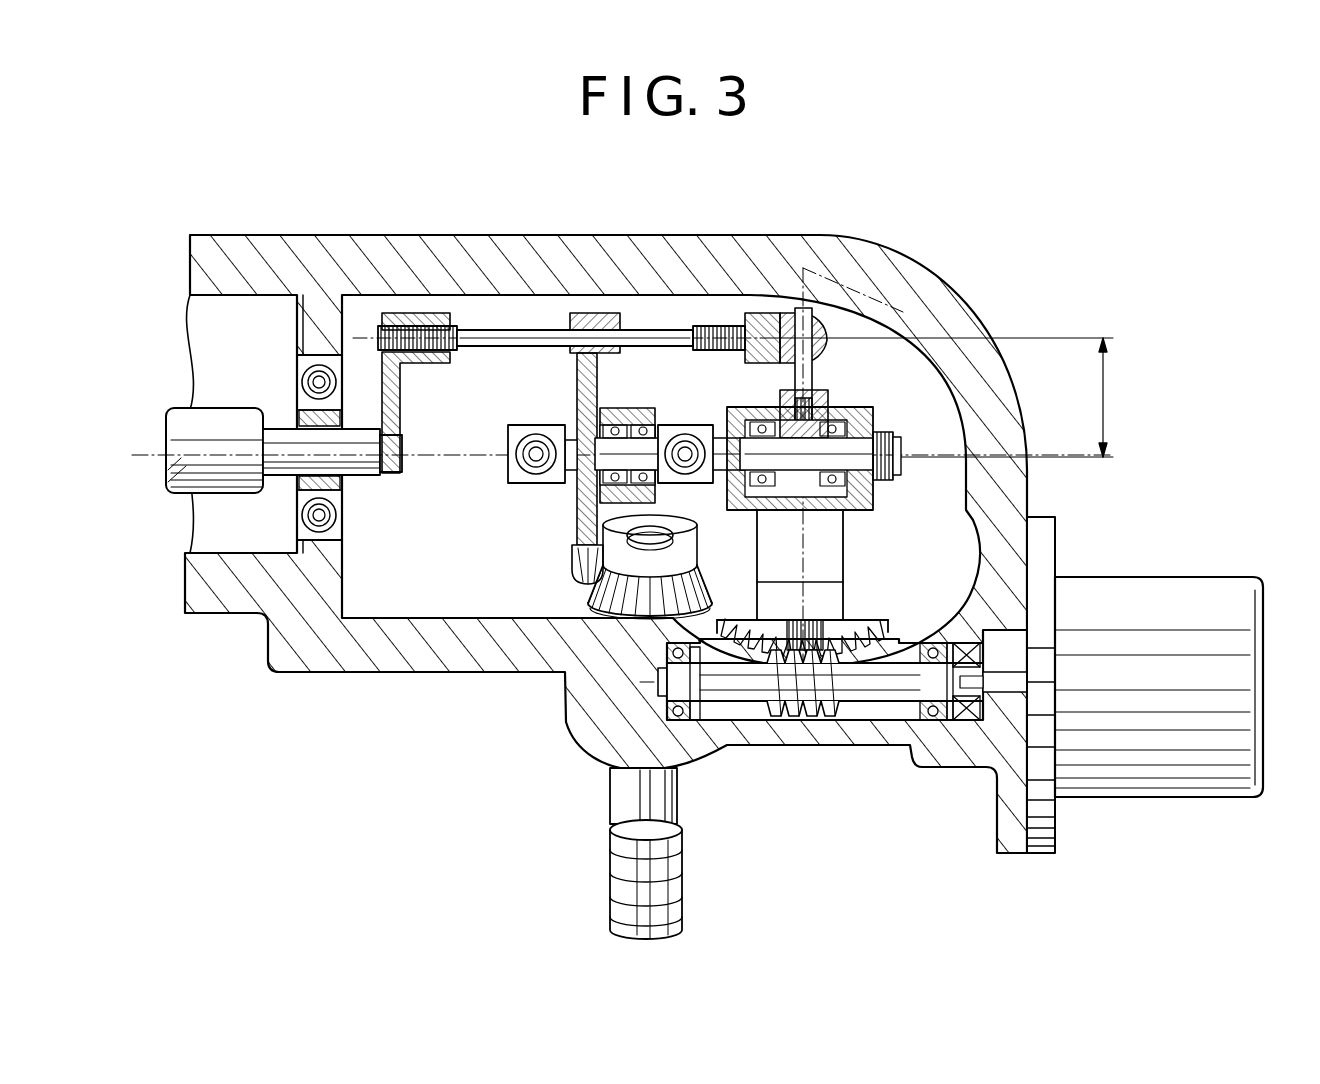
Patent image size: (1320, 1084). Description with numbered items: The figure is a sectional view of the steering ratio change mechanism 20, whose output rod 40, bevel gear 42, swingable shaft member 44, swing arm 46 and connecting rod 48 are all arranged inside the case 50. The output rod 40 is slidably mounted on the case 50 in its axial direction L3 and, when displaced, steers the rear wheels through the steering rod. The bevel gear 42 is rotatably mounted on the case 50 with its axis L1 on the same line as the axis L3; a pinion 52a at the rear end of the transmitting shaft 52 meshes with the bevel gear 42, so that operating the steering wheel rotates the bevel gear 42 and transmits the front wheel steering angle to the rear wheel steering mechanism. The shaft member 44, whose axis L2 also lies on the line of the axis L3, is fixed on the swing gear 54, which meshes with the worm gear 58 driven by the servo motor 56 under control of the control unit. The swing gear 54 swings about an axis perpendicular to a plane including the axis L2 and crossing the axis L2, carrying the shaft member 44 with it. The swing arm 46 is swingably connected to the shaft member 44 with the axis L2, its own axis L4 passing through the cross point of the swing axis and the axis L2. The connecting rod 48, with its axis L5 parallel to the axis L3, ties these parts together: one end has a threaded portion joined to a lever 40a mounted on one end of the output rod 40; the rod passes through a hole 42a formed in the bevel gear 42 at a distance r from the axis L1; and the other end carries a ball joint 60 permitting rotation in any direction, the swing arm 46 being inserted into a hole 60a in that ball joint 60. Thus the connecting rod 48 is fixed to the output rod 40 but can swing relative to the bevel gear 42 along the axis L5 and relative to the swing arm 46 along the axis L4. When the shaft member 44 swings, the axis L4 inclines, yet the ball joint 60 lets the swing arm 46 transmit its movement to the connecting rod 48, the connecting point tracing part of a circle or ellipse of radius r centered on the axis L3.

The steering ratio change mechanism 20 is at (628, 540).
The output rod 40 is at (188, 415).
The lever 40a is at (398, 375).
The bevel gear 42 is at (583, 312).
The hole 42a is at (614, 316).
The swingable shaft member 44 is at (802, 512).
The swing arm 46 is at (812, 386).
The connecting rod 48 is at (492, 325).
The case 50 is at (463, 660).
The transmitting shaft 52 is at (680, 806).
The pinion 52a is at (590, 598).
The swing gear 54 is at (838, 558).
The servo motor 56 is at (1160, 592).
The worm gear 58 is at (807, 720).
The ball joint 60 is at (752, 312).
The hole 60a is at (784, 312).
The axis L1 is at (490, 456).
The axis L2 is at (922, 456).
The axial direction L3 is at (416, 456).
The axis L4 is at (803, 268).
The axis L5 is at (893, 328).
The distance r is at (936, 397).